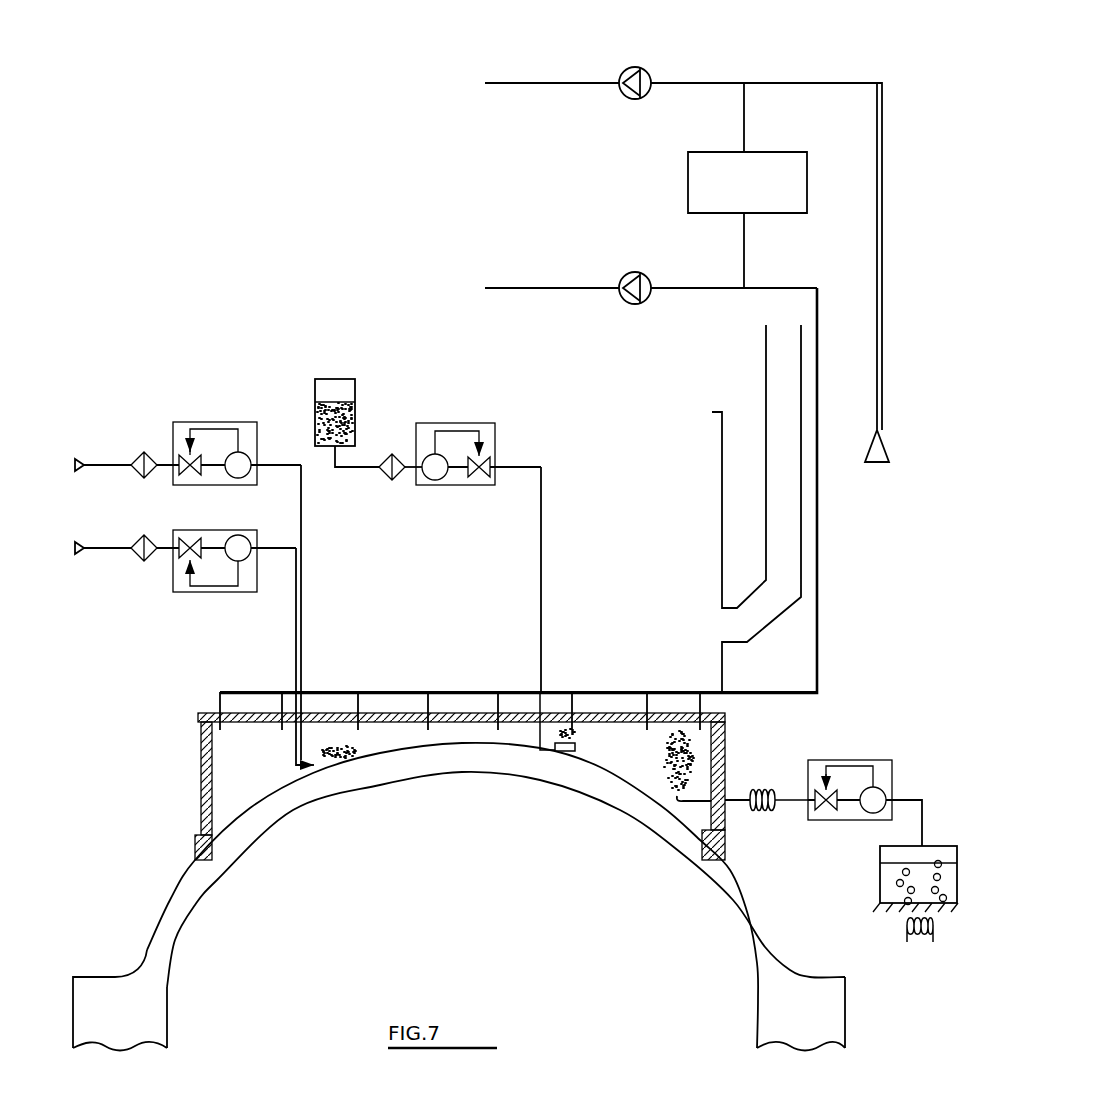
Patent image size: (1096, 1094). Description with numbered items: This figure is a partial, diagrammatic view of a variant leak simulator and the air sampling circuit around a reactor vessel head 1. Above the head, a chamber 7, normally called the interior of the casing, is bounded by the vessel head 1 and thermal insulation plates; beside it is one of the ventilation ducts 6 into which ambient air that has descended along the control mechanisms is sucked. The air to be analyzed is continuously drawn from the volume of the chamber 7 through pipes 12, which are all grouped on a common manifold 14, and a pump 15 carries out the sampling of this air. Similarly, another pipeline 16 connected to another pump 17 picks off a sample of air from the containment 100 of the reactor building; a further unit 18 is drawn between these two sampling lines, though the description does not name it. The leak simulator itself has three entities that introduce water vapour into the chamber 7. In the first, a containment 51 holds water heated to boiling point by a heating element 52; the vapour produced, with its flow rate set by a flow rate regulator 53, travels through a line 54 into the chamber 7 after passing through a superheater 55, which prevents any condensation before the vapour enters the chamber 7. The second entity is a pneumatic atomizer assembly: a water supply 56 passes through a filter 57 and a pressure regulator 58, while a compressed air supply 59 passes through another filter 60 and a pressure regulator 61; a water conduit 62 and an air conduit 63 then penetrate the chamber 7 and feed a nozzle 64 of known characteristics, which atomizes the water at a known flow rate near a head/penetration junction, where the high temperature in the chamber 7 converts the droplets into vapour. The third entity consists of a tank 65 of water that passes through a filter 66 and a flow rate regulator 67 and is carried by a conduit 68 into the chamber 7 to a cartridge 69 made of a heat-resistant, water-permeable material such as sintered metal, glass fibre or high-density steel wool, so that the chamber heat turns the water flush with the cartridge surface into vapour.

The vessel head 1 is at (718, 898).
The duct 6 is at (766, 388).
The chamber 7 is at (630, 760).
The pipe 12 is at (345, 690).
The common manifold 14 is at (820, 657).
The pump 15 is at (617, 305).
The pipeline 16 is at (796, 80).
The pump 17 is at (655, 62).
The treatment unit 18 is at (688, 181).
The containment 51 is at (878, 880).
The heating element 52 is at (920, 945).
The flow rate regulator 53 is at (851, 757).
The line 54 is at (738, 810).
The superheater 55 is at (765, 785).
The water supply 56 is at (90, 458).
The filter 57 is at (144, 450).
The pressure regulator 58 is at (217, 422).
The compressed air supply 59 is at (90, 556).
The filter 60 is at (144, 562).
The pressure regulator 61 is at (214, 598).
The water conduit 62 is at (304, 594).
The air conduit 63 is at (292, 667).
The nozzle 64 is at (317, 780).
The tank 65 is at (338, 375).
The filter 66 is at (390, 482).
The flow rate regulator 67 is at (473, 420).
The conduit 68 is at (547, 560).
The cartridge 69 is at (555, 755).
The containment 100 is at (877, 462).